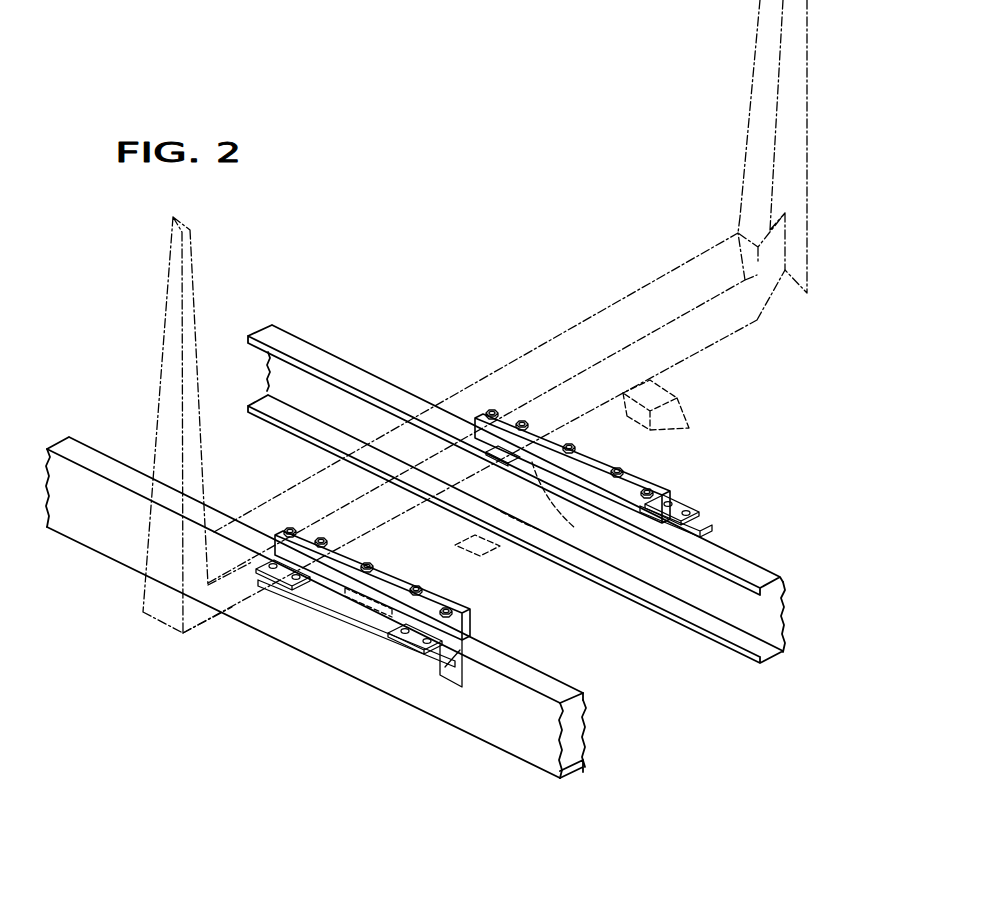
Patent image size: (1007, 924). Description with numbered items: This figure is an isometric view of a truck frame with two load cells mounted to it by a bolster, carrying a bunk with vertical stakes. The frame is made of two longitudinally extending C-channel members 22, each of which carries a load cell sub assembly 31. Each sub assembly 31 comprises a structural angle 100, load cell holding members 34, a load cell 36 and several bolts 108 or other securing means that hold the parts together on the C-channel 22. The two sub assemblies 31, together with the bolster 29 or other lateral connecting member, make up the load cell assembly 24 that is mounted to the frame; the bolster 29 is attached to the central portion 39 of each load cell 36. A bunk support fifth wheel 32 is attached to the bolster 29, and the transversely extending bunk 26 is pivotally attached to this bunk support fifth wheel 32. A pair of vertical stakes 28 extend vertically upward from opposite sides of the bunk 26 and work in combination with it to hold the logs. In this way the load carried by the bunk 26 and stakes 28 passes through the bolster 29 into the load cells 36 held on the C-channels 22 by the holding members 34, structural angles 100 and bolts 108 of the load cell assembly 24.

The C-channel member 22 is at (302, 350).
The load cell assembly 24 is at (643, 464).
The bunk 26 is at (620, 315).
The vertical stake 28 is at (757, 95).
The bolster 29 is at (472, 550).
The load cell sub assembly 31 is at (657, 469).
The bunk support fifth wheel 32 is at (560, 526).
The load cell holding member 34 is at (673, 498).
The load cell 36 is at (645, 485).
The central portion 39 is at (362, 572).
The structural angle 100 is at (687, 520).
The bolt 108 is at (428, 645).